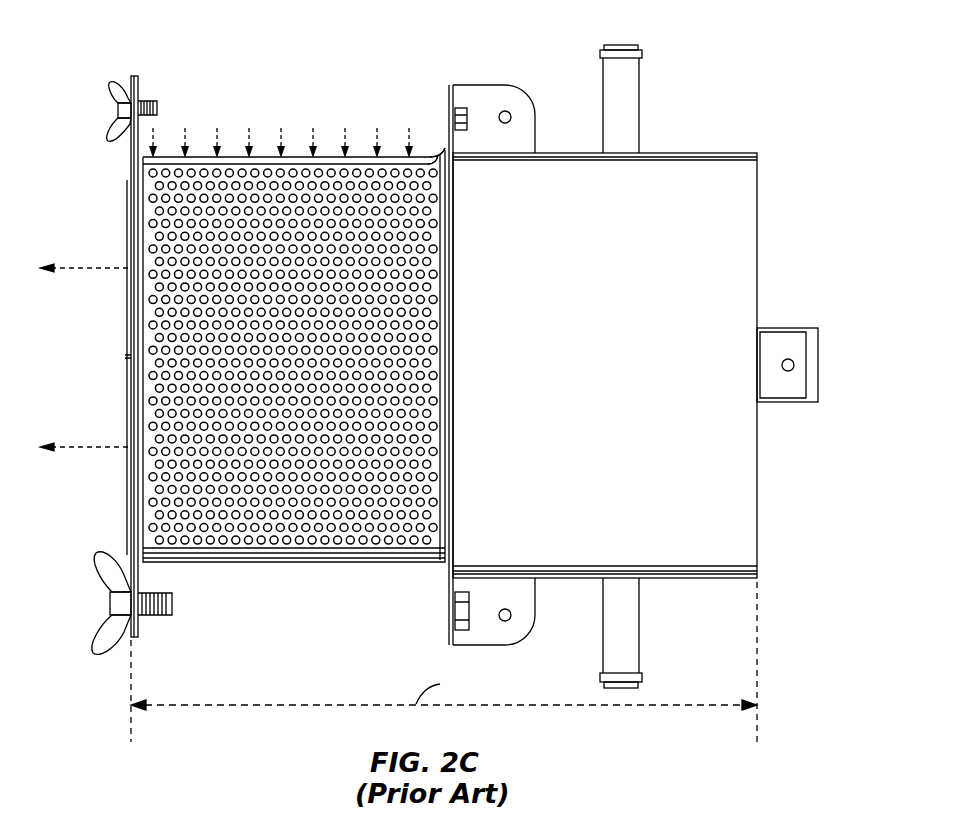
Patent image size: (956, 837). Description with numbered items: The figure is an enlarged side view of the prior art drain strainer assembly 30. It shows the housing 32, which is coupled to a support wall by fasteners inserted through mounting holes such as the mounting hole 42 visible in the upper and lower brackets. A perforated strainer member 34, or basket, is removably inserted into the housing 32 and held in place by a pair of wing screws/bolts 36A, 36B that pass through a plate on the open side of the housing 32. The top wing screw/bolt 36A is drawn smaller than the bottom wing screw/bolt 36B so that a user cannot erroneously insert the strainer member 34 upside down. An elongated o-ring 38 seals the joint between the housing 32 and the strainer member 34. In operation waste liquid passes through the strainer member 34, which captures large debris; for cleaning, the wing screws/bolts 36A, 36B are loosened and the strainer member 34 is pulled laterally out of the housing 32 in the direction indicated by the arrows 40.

The drain strainer assembly 30 is at (762, 58).
The housing 32 is at (744, 218).
The strainer member 34 is at (236, 550).
The top wing screw/bolt 36A is at (111, 86).
The bottom wing screw/bolt 36B is at (100, 632).
The elongated o-ring 38 is at (448, 148).
The arrows 40 is at (78, 266).
The mounting hole 42 is at (508, 112).